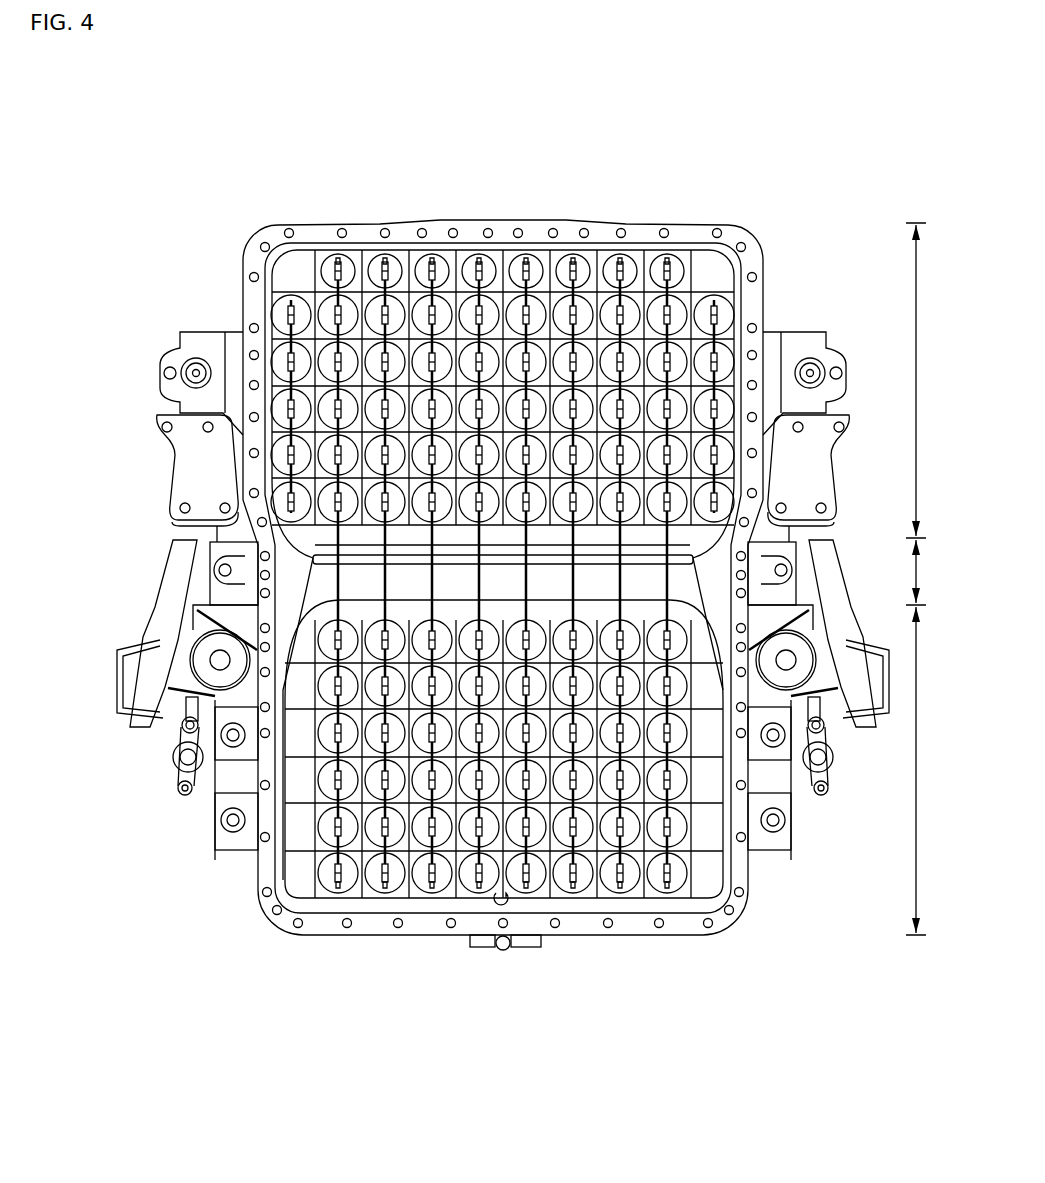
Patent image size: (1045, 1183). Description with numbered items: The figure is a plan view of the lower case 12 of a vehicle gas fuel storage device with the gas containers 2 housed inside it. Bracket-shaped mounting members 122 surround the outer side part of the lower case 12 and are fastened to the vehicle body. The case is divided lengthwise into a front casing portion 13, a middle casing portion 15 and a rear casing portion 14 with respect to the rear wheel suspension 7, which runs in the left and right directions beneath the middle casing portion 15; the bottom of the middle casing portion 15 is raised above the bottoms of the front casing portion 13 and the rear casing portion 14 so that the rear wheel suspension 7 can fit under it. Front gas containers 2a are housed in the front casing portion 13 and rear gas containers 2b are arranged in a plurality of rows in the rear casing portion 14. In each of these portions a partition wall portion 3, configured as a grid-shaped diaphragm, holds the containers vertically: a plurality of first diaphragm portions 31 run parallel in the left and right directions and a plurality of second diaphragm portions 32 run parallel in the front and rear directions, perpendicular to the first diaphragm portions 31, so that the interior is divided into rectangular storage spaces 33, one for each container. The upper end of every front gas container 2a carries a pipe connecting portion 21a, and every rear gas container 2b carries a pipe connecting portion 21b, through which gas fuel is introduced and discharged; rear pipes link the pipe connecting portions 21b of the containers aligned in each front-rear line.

The lower case 12 is at (270, 928).
The mounting member 122 is at (213, 812).
The rear wheel suspension 7 is at (175, 595).
The storage space 33 is at (372, 282).
The pipe connecting portion 21a is at (470, 310).
The pipe connecting portion 21b is at (525, 875).
The gas container 2 is at (502, 560).
The front gas container 2a is at (577, 262).
The rear gas container 2b is at (580, 880).
The partition wall portion 3 is at (503, 572).
The first diaphragm portion 31 is at (655, 260).
The second diaphragm portion 32 is at (705, 292).
The front casing portion 13 is at (928, 380).
The middle casing portion 15 is at (928, 572).
The rear casing portion 14 is at (928, 771).